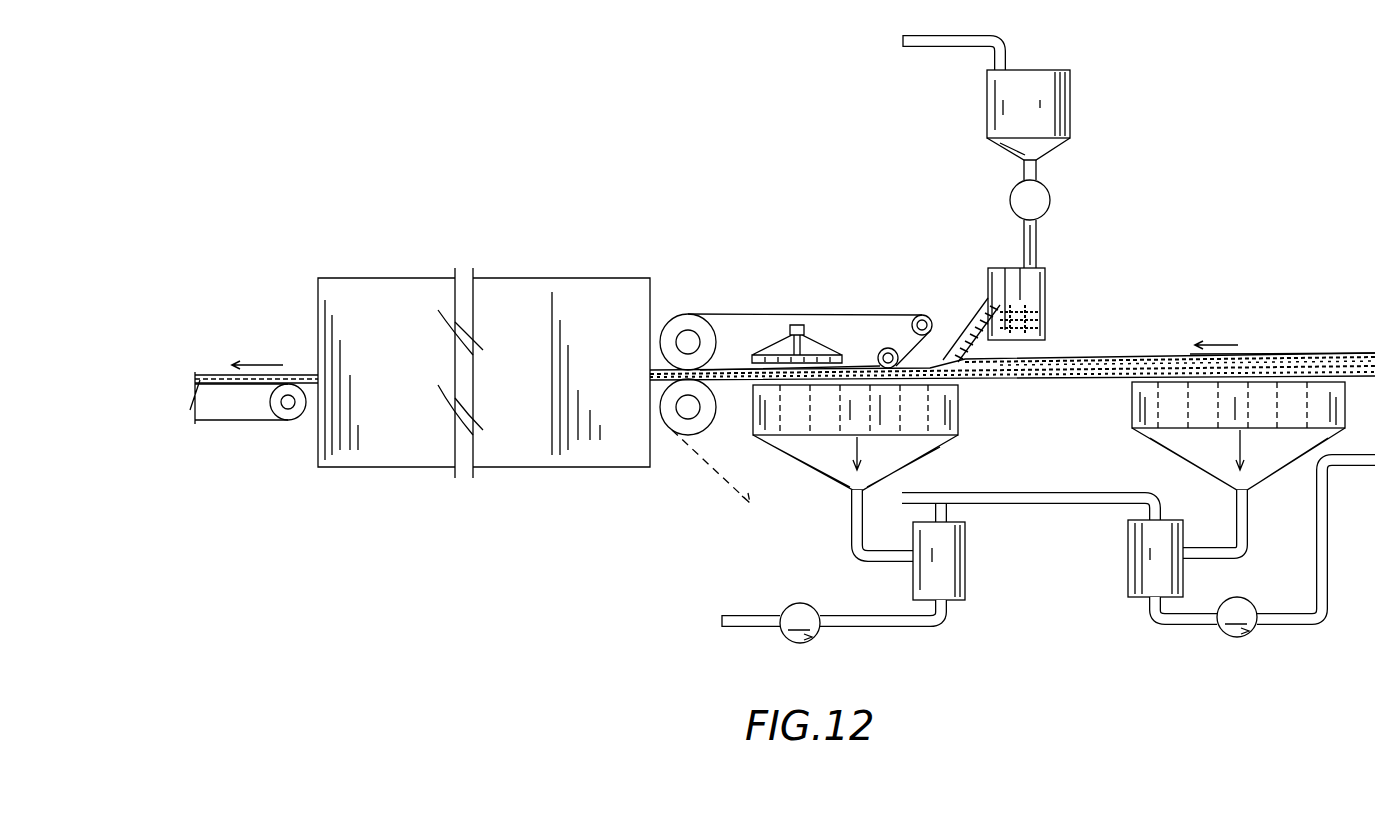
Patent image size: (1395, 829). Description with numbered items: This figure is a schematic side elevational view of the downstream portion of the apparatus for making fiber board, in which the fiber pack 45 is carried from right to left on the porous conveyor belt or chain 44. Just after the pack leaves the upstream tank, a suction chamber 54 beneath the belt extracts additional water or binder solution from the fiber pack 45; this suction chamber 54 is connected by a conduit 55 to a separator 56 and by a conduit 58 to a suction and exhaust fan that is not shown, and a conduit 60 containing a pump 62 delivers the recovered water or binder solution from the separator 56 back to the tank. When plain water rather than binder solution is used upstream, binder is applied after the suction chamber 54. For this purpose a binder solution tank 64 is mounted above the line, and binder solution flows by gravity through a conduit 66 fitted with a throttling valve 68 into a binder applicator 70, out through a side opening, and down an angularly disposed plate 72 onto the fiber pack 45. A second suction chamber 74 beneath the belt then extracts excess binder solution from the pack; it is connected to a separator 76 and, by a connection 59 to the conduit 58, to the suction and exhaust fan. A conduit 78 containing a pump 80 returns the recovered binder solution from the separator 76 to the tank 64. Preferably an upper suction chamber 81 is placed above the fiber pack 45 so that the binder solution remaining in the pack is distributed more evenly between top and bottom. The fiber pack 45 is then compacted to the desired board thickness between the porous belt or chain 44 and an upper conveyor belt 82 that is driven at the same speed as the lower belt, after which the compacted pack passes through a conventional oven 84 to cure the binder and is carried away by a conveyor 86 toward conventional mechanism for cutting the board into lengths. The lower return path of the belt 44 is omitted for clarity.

The porous conveyor belt or chain 44 is at (1095, 380).
The fiber pack 45 is at (1258, 355).
The suction chamber 54 is at (1165, 445).
The conduit 55 is at (1248, 535).
The separator 56 is at (1128, 578).
The conduit 58 is at (1055, 492).
The connection 59 is at (948, 512).
The conduit 60 is at (1316, 588).
The pump 62 is at (1257, 628).
The binder solution tank 64 is at (1072, 105).
The conduit 66 is at (1038, 175).
The throttling valve 68 is at (1051, 200).
The binder applicator 70 is at (1047, 310).
The angularly disposed plate 72 is at (982, 345).
The suction chamber 74 is at (830, 480).
The separator 76 is at (968, 586).
The conduit 78 is at (950, 45).
The pump 80 is at (808, 603).
The suction chamber 81 is at (832, 352).
The upper conveyor belt 82 is at (860, 315).
The oven 84 is at (567, 278).
The conveyor 86 is at (270, 420).